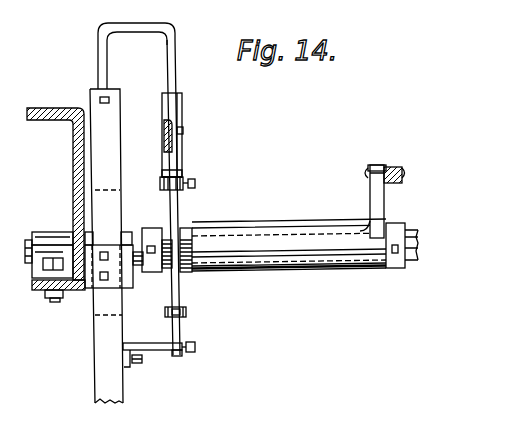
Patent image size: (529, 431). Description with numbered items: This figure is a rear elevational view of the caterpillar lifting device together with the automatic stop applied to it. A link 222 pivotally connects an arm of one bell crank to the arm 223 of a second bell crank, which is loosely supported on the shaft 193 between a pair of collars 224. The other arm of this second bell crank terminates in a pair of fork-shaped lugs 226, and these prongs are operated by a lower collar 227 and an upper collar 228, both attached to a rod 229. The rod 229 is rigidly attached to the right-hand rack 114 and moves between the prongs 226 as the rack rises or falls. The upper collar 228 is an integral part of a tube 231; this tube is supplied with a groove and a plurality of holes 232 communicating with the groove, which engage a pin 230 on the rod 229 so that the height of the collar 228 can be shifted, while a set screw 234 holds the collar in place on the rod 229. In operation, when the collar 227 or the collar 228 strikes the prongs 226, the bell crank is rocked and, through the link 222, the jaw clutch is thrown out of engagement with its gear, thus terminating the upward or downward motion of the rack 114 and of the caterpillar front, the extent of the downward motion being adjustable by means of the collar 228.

The right-hand rack 114 is at (105, 163).
The rod 229 is at (177, 73).
The tube 231 is at (182, 103).
The pin 230 is at (185, 129).
The holes 232 is at (183, 143).
The collar 228 is at (181, 177).
The set screw 234 is at (196, 184).
The fork-shaped lugs 226 is at (190, 258).
The collars 224 is at (148, 276).
The arm 223 is at (374, 204).
The link 222 is at (398, 162).
The shaft 193 is at (415, 263).
The collar 227 is at (188, 312).